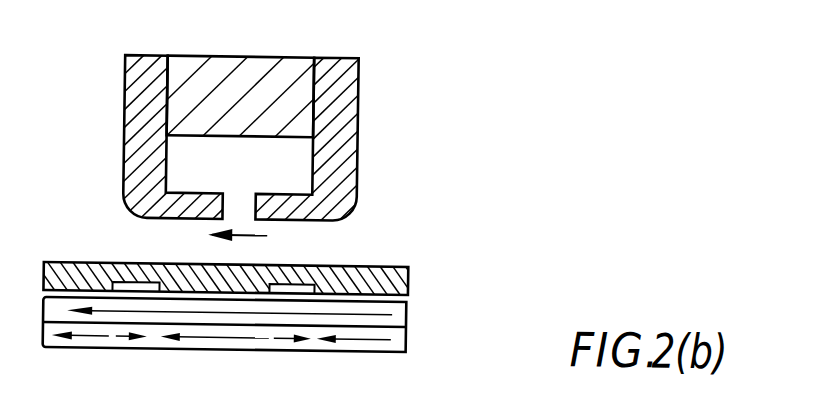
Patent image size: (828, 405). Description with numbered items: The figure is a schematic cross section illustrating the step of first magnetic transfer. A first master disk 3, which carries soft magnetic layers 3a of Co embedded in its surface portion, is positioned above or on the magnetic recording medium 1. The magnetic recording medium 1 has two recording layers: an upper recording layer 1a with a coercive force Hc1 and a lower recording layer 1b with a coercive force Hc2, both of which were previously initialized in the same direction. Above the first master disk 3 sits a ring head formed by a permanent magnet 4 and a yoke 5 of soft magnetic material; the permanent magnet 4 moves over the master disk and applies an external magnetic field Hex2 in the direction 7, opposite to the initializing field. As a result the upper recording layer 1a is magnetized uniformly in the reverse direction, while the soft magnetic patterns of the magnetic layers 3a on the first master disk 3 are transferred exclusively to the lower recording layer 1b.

The magnetic recording medium 1 is at (477, 314).
The upper recording layer 1a is at (409, 300).
The lower recording layer 1b is at (409, 332).
The first master disk 3 is at (387, 262).
The magnetic layers 3a is at (303, 281).
The permanent magnet 4 is at (198, 63).
The yoke 5 is at (324, 57).
The direction 7 is at (216, 238).